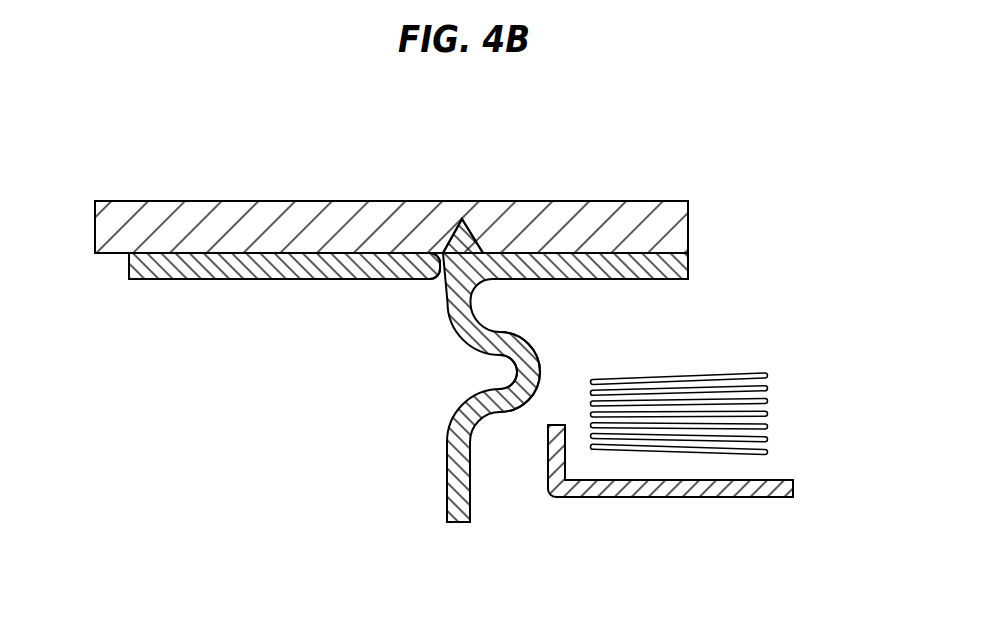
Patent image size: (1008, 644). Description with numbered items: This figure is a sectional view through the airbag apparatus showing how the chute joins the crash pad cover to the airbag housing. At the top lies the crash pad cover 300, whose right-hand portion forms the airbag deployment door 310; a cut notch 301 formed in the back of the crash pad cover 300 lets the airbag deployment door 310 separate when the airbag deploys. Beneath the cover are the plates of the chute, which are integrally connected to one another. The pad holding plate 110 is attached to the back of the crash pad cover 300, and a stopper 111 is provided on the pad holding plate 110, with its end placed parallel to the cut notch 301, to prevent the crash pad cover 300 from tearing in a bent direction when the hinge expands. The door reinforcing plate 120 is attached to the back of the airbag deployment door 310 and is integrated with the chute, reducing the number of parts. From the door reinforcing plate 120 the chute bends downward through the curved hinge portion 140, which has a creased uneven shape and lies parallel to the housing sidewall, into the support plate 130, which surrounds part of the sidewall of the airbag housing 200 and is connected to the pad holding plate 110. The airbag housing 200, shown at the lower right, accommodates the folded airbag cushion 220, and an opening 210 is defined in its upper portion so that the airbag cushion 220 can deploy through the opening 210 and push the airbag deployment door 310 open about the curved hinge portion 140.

The crash pad cover 300 is at (313, 210).
The cut notch 301 is at (465, 222).
The airbag deployment door 310 is at (610, 210).
The pad holding plate 110 is at (235, 272).
The stopper 111 is at (410, 272).
The door reinforcing plate 120 is at (680, 264).
The support plate 130 is at (452, 487).
The curved hinge portion 140 is at (538, 364).
The airbag housing 200 is at (718, 488).
The opening 210 is at (568, 398).
The airbag cushion 220 is at (727, 376).